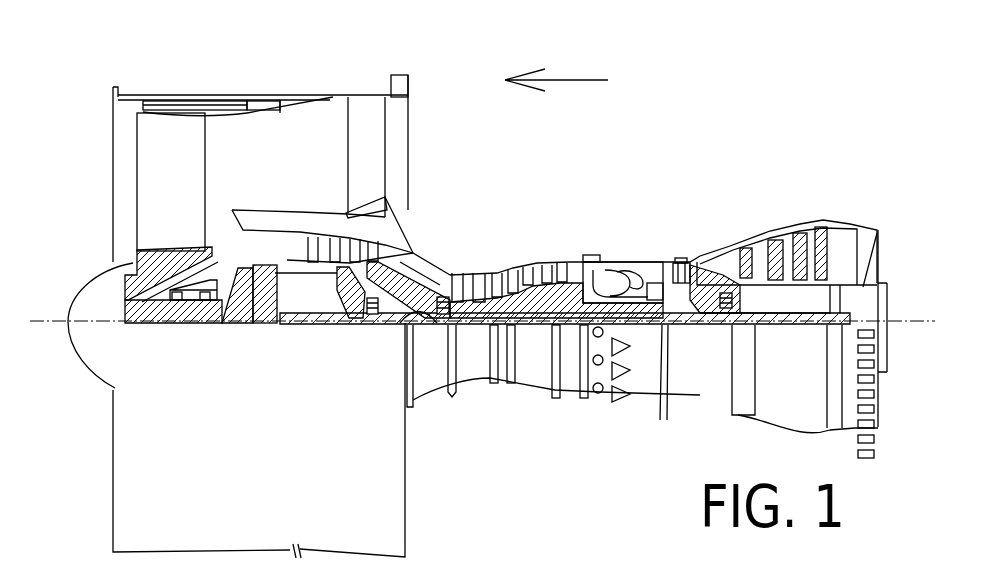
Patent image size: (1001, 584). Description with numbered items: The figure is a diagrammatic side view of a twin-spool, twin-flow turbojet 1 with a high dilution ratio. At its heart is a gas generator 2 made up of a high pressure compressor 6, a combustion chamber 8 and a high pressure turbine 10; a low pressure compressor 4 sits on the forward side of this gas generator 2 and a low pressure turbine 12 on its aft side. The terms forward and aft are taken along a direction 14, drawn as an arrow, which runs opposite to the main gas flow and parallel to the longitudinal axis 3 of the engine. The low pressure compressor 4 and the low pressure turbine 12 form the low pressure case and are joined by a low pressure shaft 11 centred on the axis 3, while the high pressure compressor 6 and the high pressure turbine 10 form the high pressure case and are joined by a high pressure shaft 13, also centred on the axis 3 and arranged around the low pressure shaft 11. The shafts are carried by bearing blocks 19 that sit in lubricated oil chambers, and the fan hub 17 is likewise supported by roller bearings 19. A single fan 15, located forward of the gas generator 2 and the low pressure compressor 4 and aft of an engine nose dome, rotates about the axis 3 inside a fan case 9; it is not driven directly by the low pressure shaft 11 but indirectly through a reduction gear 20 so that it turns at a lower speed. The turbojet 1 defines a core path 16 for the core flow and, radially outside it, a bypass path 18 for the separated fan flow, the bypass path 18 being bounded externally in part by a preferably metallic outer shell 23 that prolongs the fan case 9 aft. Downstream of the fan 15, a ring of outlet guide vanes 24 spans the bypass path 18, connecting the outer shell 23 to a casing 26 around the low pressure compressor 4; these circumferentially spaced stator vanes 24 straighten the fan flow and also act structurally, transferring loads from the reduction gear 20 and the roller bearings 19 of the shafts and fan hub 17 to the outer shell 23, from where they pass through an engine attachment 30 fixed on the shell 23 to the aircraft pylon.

The turbojet 1 is at (582, 197).
The gas generator 2 is at (526, 394).
The longitudinal axis 3 is at (45, 323).
The low pressure compressor 4 is at (367, 201).
The high pressure compressor 6 is at (532, 273).
The combustion chamber 8 is at (632, 270).
The fan case 9 is at (225, 100).
The high pressure turbine 10 is at (683, 263).
The low pressure shaft 11 is at (442, 314).
The low pressure turbine 12 is at (778, 228).
The high pressure shaft 13 is at (700, 328).
The direction 14 is at (598, 78).
The fan 15 is at (158, 100).
The core path 16 is at (435, 280).
The fan hub 17 is at (180, 303).
The bypass path 18 is at (268, 155).
The bearing blocks 19 is at (208, 303).
The reduction gear 20 is at (268, 325).
The outer shell 23 is at (331, 96).
The outlet guide vanes 24 is at (368, 148).
The casing 26 is at (308, 205).
The engine attachment 30 is at (408, 82).